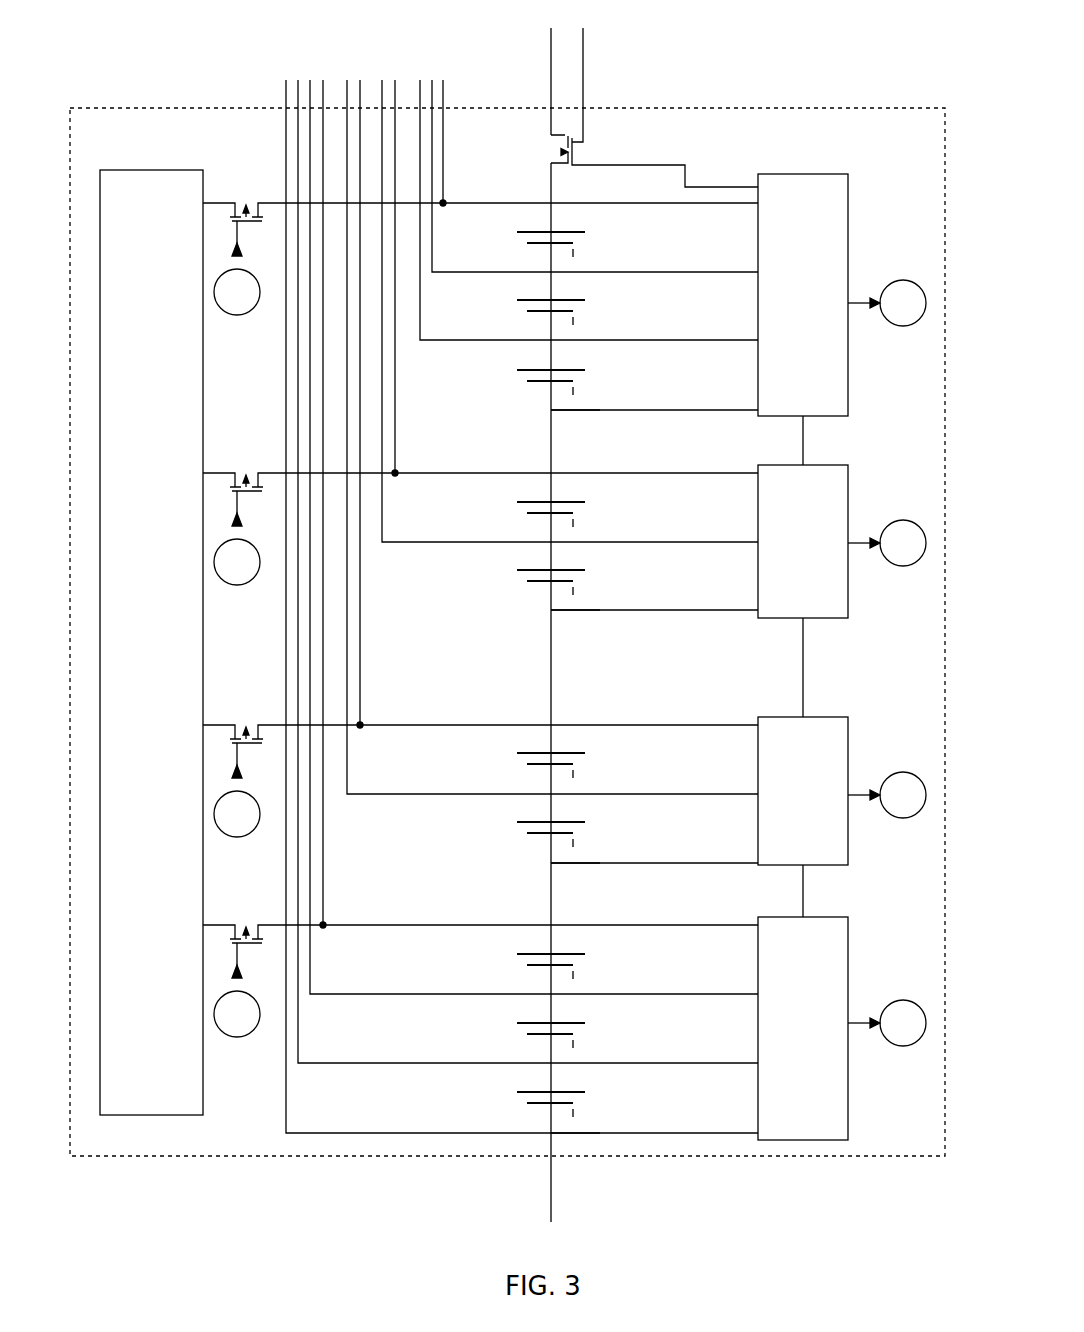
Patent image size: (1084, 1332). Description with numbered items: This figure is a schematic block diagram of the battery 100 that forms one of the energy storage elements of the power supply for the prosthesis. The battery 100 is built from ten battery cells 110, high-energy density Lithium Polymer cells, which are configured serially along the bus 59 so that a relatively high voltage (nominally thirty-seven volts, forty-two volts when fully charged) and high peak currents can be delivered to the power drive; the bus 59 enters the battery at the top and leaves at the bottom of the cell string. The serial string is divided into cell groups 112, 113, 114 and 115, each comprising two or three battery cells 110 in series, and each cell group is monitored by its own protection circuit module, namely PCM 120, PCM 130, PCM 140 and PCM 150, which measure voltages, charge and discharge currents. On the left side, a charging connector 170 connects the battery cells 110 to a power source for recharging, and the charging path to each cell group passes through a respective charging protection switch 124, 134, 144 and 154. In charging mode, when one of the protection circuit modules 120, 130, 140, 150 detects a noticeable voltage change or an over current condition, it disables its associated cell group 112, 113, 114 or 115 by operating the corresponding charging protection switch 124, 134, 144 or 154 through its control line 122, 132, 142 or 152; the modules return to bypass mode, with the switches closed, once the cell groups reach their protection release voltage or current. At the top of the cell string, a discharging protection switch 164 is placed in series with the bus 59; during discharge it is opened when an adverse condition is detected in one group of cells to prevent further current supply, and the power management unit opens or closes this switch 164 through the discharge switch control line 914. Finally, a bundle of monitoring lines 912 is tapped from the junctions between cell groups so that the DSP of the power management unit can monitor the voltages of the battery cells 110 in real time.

The battery 100 is at (690, 108).
The charging connector 170 is at (115, 168).
The monitoring lines 912 is at (352, 51).
The bus 59 is at (551, 45).
The discharge switch control line 914 is at (583, 92).
The discharging protection switch 164 is at (555, 152).
The charging protection switch 124 is at (232, 203).
The charging protection switch 134 is at (232, 473).
The charging protection switch 144 is at (232, 725).
The charging protection switch 154 is at (232, 925).
The control line 122 is at (570, 297).
The control line 132 is at (570, 552).
The control line 142 is at (570, 804).
The control line 152 is at (570, 1018).
The protection circuit module 120 is at (848, 190).
The protection circuit module 130 is at (848, 480).
The protection circuit module 140 is at (848, 735).
The protection circuit module 150 is at (848, 935).
The battery cell 110 is at (535, 383).
The cell group 112 is at (573, 434).
The cell group 113 is at (573, 634).
The cell group 114 is at (573, 887).
The cell group 115 is at (573, 1157).